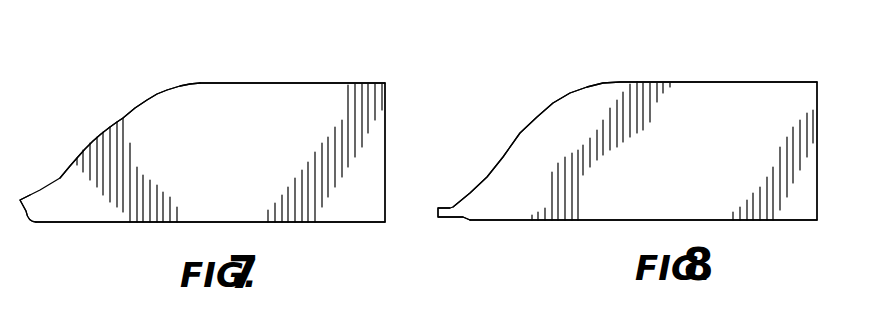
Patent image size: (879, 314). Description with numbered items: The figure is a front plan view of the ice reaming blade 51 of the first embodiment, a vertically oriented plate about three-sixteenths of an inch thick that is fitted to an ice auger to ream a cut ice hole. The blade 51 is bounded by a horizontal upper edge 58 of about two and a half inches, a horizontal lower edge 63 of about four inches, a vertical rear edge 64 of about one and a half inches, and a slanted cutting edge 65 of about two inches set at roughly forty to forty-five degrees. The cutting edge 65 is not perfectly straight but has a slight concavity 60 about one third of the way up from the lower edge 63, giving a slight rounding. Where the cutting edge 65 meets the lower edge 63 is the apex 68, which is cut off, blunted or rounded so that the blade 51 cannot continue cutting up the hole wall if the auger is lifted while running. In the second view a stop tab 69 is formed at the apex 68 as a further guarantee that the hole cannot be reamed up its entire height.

In FIG. 7, the ice reaming blade 51 is at (237, 164).
In FIG. 8, the ice reaming blade 51 is at (671, 162).
In FIG. 7, the horizontal upper edge 58 is at (240, 83).
In FIG. 8, the horizontal upper edge 58 is at (728, 82).
In FIG. 7, the concavity 60 is at (55, 148).
In FIG. 8, the concavity 60 is at (485, 150).
In FIG. 7, the horizontal lower edge 63 is at (290, 222).
In FIG. 8, the horizontal lower edge 63 is at (725, 220).
In FIG. 7, the vertical rear edge 64 is at (385, 123).
In FIG. 8, the vertical rear edge 64 is at (817, 120).
In FIG. 7, the slanted cutting edge 65 is at (172, 88).
In FIG. 8, the slanted cutting edge 65 is at (603, 86).
In FIG. 7, the apex 68 is at (20, 200).
In FIG. 8, the stop tab 69 is at (437, 217).